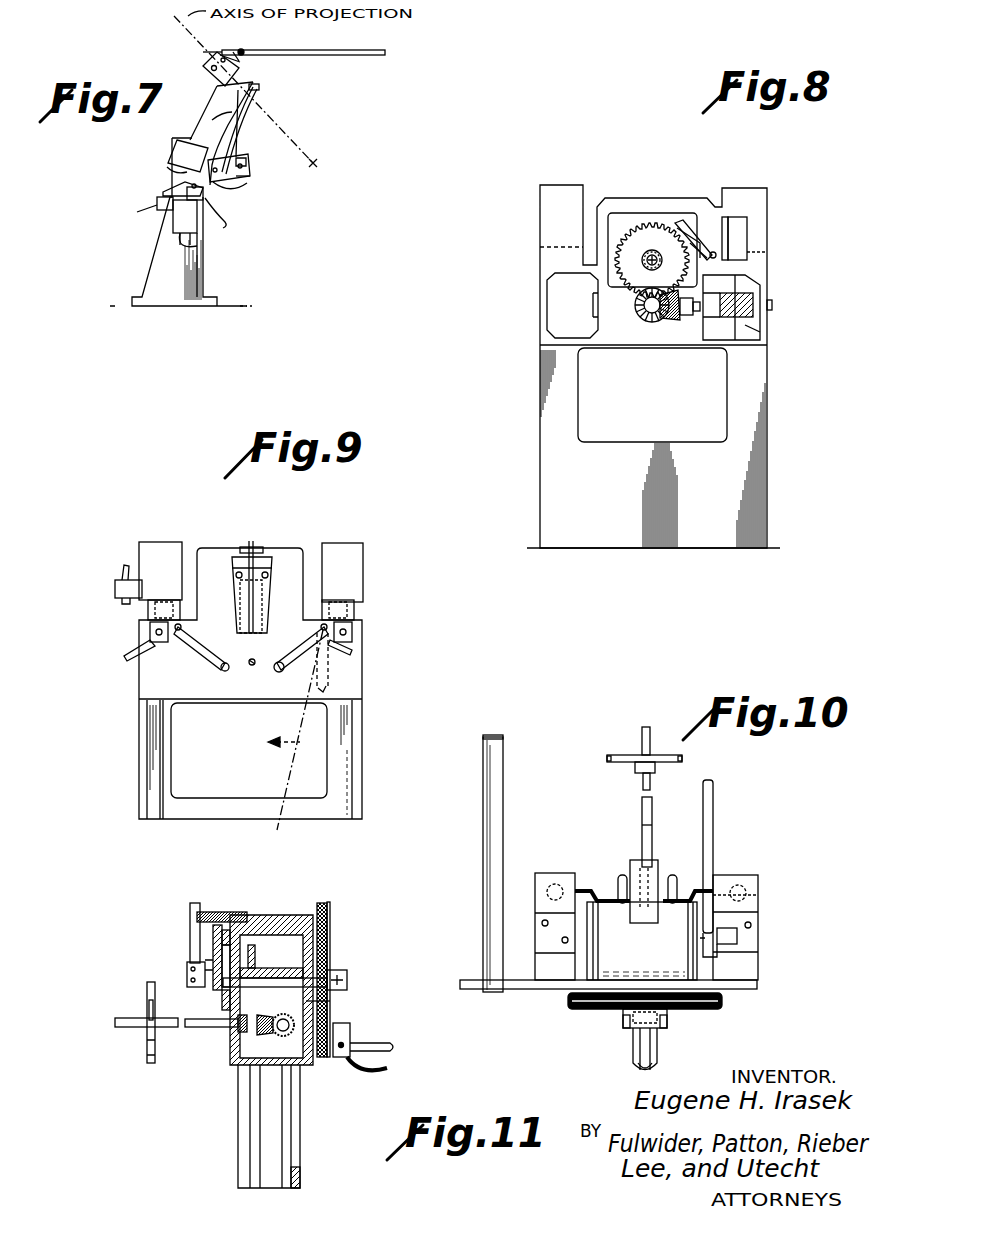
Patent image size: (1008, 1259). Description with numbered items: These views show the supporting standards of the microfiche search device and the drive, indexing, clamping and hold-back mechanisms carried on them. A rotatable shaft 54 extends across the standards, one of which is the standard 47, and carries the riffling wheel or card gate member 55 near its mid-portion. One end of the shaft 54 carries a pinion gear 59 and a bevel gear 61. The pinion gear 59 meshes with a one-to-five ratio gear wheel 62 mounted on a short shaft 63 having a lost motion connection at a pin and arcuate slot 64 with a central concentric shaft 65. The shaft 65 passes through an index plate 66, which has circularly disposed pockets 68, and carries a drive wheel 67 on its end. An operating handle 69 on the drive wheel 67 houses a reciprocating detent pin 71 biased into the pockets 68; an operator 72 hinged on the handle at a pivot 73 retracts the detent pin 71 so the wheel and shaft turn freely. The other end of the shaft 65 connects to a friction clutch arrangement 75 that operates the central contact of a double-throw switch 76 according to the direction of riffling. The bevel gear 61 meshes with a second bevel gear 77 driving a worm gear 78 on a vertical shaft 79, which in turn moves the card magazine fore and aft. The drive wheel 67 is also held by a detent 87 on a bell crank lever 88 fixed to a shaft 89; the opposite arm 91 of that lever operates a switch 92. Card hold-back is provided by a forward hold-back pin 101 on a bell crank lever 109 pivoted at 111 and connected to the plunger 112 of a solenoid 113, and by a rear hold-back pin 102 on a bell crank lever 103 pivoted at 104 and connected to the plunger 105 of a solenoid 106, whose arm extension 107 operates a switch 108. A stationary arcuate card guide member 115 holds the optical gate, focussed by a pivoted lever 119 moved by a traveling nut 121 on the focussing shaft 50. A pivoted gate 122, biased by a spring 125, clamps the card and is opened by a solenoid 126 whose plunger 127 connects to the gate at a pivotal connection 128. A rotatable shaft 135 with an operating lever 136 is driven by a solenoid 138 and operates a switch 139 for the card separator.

In FIG. 7, the standard 47 is at (158, 258).
In FIG. 7, the focussing shaft 50 is at (370, 55).
In FIG. 7, the rotatable shaft 54 is at (255, 172).
In FIG. 9, the rotatable shaft 54 is at (255, 665).
In FIG. 10, the rotatable shaft 54 is at (642, 810).
In FIG. 11, the rotatable shaft 54 is at (124, 1027).
In FIG. 10, the riffling wheel or card gate member 55 is at (622, 758).
In FIG. 11, the riffling wheel or card gate member 55 is at (146, 1055).
In FIG. 8, the pinion gear 59 is at (650, 322).
In FIG. 11, the pinion gear 59 is at (245, 1032).
In FIG. 8, the bevel gear 61 is at (667, 320).
In FIG. 11, the bevel gear 61 is at (258, 1035).
In FIG. 8, the gear wheel 62 is at (642, 228).
In FIG. 11, the gear wheel 62 is at (255, 958).
In FIG. 8, the short shaft 63 is at (660, 257).
In FIG. 11, the short shaft 63 is at (322, 950).
In FIG. 8, the pin and arcuate slot 64 is at (653, 249).
In FIG. 11, the pin and arcuate slot 64 is at (278, 1014).
In FIG. 11, the central concentric shaft 65 is at (345, 975).
In FIG. 10, the index plate 66 is at (500, 990).
In FIG. 11, the index plate 66 is at (296, 915).
In FIG. 10, the drive wheel 67 is at (690, 1008).
In FIG. 11, the drive wheel 67 is at (330, 1005).
In FIG. 11, the pockets 68 is at (330, 905).
In FIG. 10, the operating handle 69 is at (640, 1072).
In FIG. 11, the operating handle 69 is at (393, 1046).
In FIG. 11, the detent pin 71 is at (290, 1065).
In FIG. 10, the operator 72 is at (658, 1048).
In FIG. 11, the operator 72 is at (387, 1068).
In FIG. 11, the pivot 73 is at (350, 1025).
In FIG. 9, the friction clutch arrangement 75 is at (275, 598).
In FIG. 11, the friction clutch arrangement 75 is at (187, 950).
In FIG. 9, the double-throw switch 76 is at (258, 542).
In FIG. 11, the double-throw switch 76 is at (190, 913).
In FIG. 8, the second bevel gear 77 is at (690, 322).
In FIG. 8, the worm gear 78 is at (760, 285).
In FIG. 8, the vertical shaft 79 is at (760, 322).
In FIG. 8, the detent 87 is at (683, 222).
In FIG. 8, the bell crank lever 88 is at (690, 240).
In FIG. 8, the shaft 89 is at (718, 256).
In FIG. 10, the shaft 89 is at (713, 800).
In FIG. 8, the opposite arm 91 is at (724, 220).
In FIG. 10, the opposite arm 91 is at (705, 950).
In FIG. 8, the switch 92 is at (748, 228).
In FIG. 10, the switch 92 is at (740, 938).
In FIG. 9, the forward hold-back pin 101 is at (277, 660).
In FIG. 10, the forward hold-back pin 101 is at (620, 877).
In FIG. 9, the rear hold-back pin 102 is at (222, 670).
In FIG. 10, the rear hold-back pin 102 is at (690, 856).
In FIG. 9, the bell crank lever 103 is at (200, 660).
In FIG. 10, the bell crank lever 103 is at (680, 910).
In FIG. 9, the pivot 104 is at (183, 628).
In FIG. 9, the plunger 105 is at (148, 612).
In FIG. 9, the solenoid 106 is at (168, 545).
In FIG. 10, the solenoid 106 is at (758, 882).
In FIG. 9, the arm extension 107 is at (125, 648).
In FIG. 9, the switch 108 is at (115, 591).
In FIG. 9, the bell crank lever 109 is at (345, 650).
In FIG. 10, the bell crank lever 109 is at (612, 910).
In FIG. 9, the pivot 111 is at (320, 628).
In FIG. 9, the plunger 112 is at (350, 612).
In FIG. 9, the solenoid 113 is at (355, 570).
In FIG. 10, the solenoid 113 is at (546, 873).
In FIG. 7, the arcuate card guide member 115 is at (212, 112).
In FIG. 7, the pivoted lever 119 is at (240, 66).
In FIG. 7, the traveling nut 121 is at (243, 51).
In FIG. 7, the pivoted gate 122 is at (243, 118).
In FIG. 7, the spring 125 is at (246, 154).
In FIG. 7, the solenoid 126 is at (180, 149).
In FIG. 7, the plunger 127 is at (225, 197).
In FIG. 7, the pivotal connection 128 is at (250, 180).
In FIG. 7, the rotatable shaft 135 is at (197, 230).
In FIG. 7, the operating lever 136 is at (173, 185).
In FIG. 7, the solenoid 138 is at (203, 252).
In FIG. 7, the switch 139 is at (157, 208).